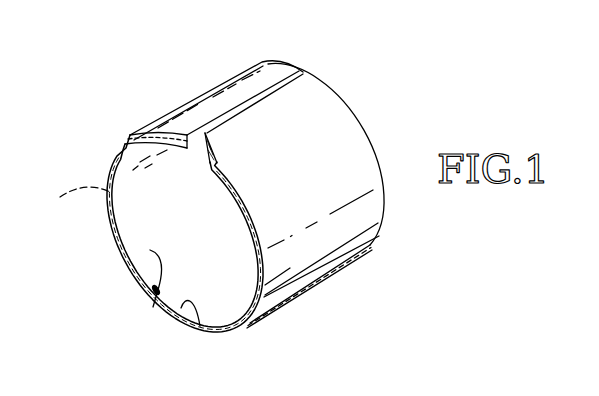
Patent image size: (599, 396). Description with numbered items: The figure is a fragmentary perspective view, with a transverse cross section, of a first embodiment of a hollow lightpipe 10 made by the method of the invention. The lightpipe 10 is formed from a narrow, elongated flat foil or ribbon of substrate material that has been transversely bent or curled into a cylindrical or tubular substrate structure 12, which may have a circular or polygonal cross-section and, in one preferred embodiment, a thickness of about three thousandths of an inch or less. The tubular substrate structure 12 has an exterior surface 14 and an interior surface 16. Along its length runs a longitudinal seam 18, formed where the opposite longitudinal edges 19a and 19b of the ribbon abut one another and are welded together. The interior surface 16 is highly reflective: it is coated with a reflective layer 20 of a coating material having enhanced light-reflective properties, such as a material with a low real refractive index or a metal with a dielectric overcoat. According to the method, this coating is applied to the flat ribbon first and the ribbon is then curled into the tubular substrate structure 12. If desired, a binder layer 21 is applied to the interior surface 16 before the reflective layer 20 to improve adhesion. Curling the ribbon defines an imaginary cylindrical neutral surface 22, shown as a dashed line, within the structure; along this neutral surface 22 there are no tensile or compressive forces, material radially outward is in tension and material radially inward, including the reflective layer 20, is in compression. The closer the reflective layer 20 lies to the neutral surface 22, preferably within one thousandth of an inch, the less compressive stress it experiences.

The hollow lightpipe 10 is at (162, 100).
The tubular substrate structure 12 is at (346, 233).
The exterior surface 14 is at (322, 100).
The interior surface 16 is at (150, 291).
The longitudinal seam 18 is at (282, 76).
The longitudinal edge 19a is at (128, 138).
The longitudinal edge 19b is at (216, 156).
The reflective layer 20 is at (154, 303).
The binder layer 21 is at (200, 328).
The neutral surface 22 is at (75, 203).